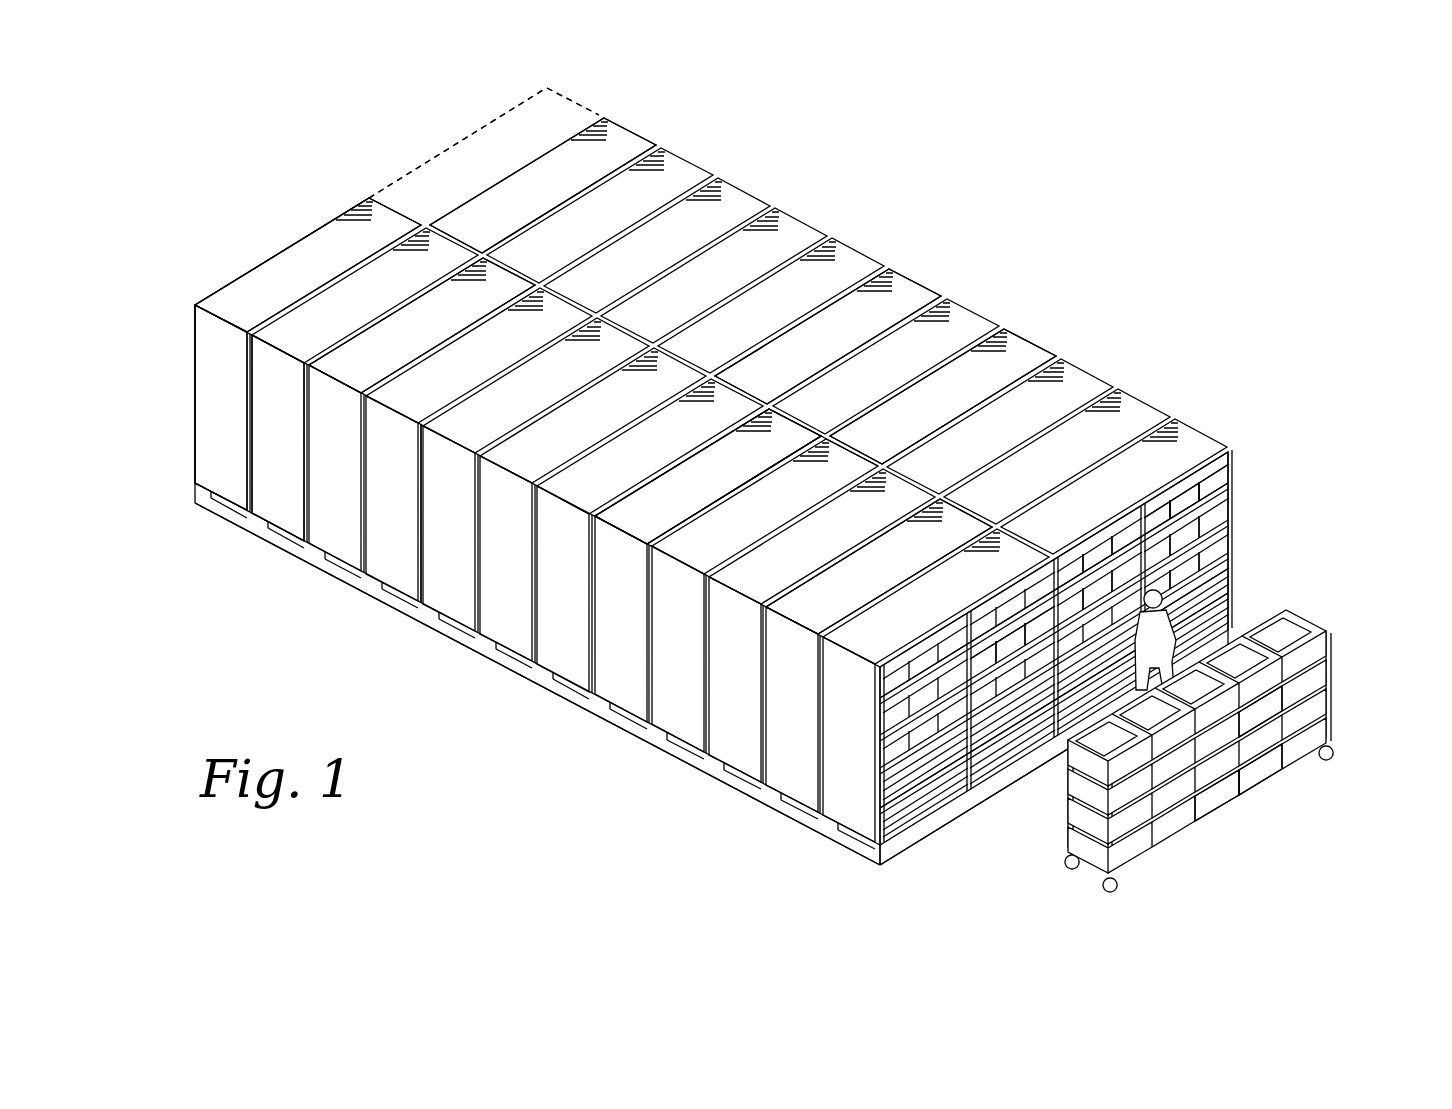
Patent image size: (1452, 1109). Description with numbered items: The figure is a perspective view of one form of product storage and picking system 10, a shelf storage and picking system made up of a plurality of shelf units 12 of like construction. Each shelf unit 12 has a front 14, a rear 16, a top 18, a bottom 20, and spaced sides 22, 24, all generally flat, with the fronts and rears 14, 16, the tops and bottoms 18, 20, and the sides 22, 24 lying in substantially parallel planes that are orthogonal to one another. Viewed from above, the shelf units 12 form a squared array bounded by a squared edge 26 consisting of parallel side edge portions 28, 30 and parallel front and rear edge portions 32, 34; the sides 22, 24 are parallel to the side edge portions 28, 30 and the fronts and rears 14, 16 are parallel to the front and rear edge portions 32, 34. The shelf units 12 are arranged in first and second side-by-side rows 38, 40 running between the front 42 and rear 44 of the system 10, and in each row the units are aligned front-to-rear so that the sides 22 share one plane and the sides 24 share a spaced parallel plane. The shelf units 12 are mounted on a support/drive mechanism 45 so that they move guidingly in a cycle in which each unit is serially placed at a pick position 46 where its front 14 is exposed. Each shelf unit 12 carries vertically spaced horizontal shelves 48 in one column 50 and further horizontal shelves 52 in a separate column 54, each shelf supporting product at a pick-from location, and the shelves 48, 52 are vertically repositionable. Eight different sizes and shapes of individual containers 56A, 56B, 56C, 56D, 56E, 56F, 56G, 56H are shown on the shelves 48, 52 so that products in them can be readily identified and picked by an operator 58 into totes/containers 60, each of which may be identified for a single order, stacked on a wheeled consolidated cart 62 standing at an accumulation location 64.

The product storage and picking system 10 is at (1250, 388).
The shelf unit 12 is at (585, 162).
The front 14 is at (258, 372).
The rear 16 is at (230, 288).
The top 18 is at (364, 226).
The bottom 20 is at (205, 493).
The side 22 is at (422, 228).
The side 24 is at (222, 348).
The squared edge 26 is at (493, 106).
The side edge portion 28 is at (590, 106).
The side edge portion 30 is at (192, 312).
The front edge portion 32 is at (1230, 463).
The rear edge portion 34 is at (438, 160).
The first row 38 is at (350, 294).
The second row 40 is at (907, 356).
The front of the system 42 is at (969, 822).
The rear of the system 44 is at (251, 264).
The support/drive mechanism 45 is at (532, 682).
The pick position 46 is at (1232, 515).
The horizontal shelves 48 is at (950, 805).
The column 50 is at (916, 654).
The horizontal shelves 52 is at (1233, 478).
The column 54 is at (998, 596).
The container 56A is at (1165, 500).
The container 56B is at (1167, 520).
The container 56C is at (1233, 560).
The container 56D is at (1233, 608).
The container 56E is at (1290, 708).
The container 56F is at (1104, 532).
The container 56G is at (1198, 822).
The container 56H is at (1245, 796).
The operator 58 is at (1231, 761).
The totes/containers 60 is at (1328, 640).
The wheeled consolidated cart 62 is at (1090, 856).
The accumulation location 64 is at (1157, 850).